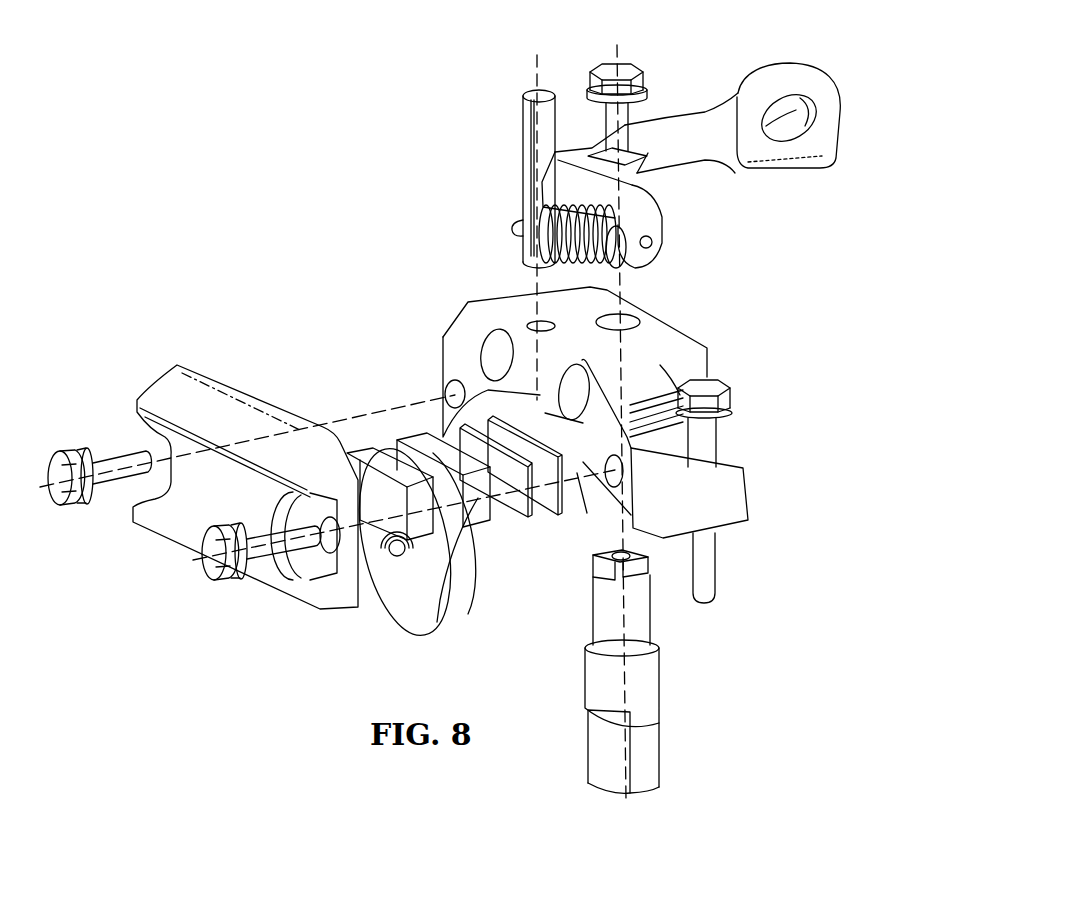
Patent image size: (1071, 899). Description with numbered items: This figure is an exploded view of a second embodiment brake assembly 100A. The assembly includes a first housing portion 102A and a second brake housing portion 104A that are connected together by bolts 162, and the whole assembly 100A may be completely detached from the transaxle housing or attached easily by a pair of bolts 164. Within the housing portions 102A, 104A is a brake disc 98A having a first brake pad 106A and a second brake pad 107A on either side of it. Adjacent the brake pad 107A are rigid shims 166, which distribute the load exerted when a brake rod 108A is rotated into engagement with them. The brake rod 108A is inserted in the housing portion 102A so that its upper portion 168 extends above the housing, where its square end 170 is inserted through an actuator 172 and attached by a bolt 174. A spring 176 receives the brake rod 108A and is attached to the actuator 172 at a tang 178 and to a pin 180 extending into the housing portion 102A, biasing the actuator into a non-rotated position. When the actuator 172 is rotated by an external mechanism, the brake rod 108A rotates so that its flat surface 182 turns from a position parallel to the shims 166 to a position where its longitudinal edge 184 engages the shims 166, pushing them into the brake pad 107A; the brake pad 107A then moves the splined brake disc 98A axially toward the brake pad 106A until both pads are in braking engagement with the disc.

The brake disc 98A is at (413, 637).
The brake assembly 100A is at (414, 187).
The first housing portion 102A is at (453, 315).
The second brake housing portion 104A is at (178, 366).
The first brake pad 106A is at (398, 537).
The second brake pad 107A is at (433, 617).
The brake rod 108A is at (668, 692).
The bolts 162 is at (66, 511).
The bolts 164 is at (731, 400).
The rigid shims 166 is at (543, 513).
The upper portion 168 is at (654, 604).
The square end 170 is at (593, 568).
The actuator 172 is at (833, 77).
The bolt 174 is at (646, 63).
The spring 176 is at (635, 281).
The tang 178 is at (653, 242).
The pin 180 is at (516, 111).
The flat surface 182 is at (615, 778).
The longitudinal edge 184 is at (660, 700).